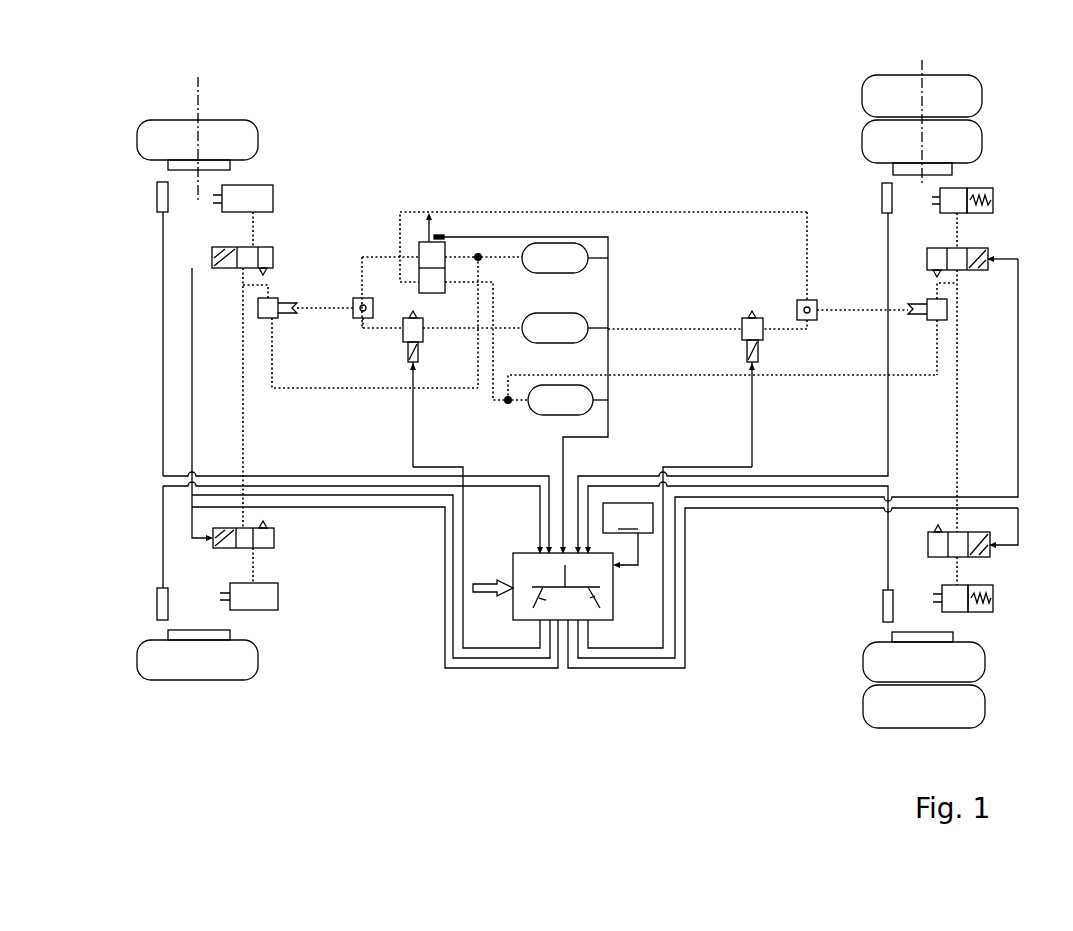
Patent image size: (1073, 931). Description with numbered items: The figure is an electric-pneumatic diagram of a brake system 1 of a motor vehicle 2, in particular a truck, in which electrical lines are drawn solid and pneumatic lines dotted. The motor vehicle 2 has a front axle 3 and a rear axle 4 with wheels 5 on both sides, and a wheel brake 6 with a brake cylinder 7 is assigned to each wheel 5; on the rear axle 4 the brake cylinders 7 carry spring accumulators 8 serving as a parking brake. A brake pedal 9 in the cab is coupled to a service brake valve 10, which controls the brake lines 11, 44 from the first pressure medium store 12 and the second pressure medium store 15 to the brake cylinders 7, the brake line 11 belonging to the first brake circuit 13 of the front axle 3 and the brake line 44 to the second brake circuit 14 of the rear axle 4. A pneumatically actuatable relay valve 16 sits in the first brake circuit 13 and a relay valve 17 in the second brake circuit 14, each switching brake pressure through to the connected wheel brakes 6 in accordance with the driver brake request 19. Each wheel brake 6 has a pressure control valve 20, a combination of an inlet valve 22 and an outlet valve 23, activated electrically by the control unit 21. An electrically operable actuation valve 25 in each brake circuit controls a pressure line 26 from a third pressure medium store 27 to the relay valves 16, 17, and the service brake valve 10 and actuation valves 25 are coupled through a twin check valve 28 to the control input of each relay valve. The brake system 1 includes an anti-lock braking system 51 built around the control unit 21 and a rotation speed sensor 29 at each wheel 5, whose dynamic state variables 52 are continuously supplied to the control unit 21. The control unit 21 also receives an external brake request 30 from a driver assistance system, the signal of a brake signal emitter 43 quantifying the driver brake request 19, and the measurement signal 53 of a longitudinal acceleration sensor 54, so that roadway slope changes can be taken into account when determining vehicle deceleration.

The brake system 1 is at (432, 634).
The motor vehicle 2 is at (567, 126).
The front axle 3 is at (200, 100).
The rear axle 4 is at (924, 64).
The wheel 5 is at (243, 135).
The wheel brake 6 is at (252, 170).
The brake cylinder 7 is at (258, 195).
The spring accumulator 8 is at (992, 204).
The brake pedal 9 is at (428, 212).
The service brake valve 10 is at (414, 238).
The brake line 11 is at (365, 256).
The first pressure medium store 12 is at (590, 256).
The first brake circuit 13 is at (334, 389).
The second brake circuit 14 is at (670, 376).
The second pressure medium store 15 is at (596, 400).
The relay valve 16 is at (278, 300).
The relay valve 17 is at (948, 310).
The driver brake request 19 is at (560, 236).
The pressure control valve 20 is at (232, 280).
The control unit 21 is at (600, 568).
The inlet valve 22 is at (234, 251).
The outlet valve 23 is at (262, 252).
The actuation valve 25 is at (420, 333).
The pressure line 26 is at (392, 338).
The third pressure medium store 27 is at (590, 322).
The twin check valve 28 is at (355, 319).
The rotation speed sensor 29 is at (156, 199).
The external brake request 30 is at (508, 580).
The brake signal emitter 43 is at (440, 232).
The brake line 44 is at (518, 212).
The anti-lock braking system 51 is at (878, 540).
The dynamic state variables 52 is at (887, 400).
The measurement signal 53 is at (665, 555).
The longitudinal acceleration sensor 54 is at (628, 535).